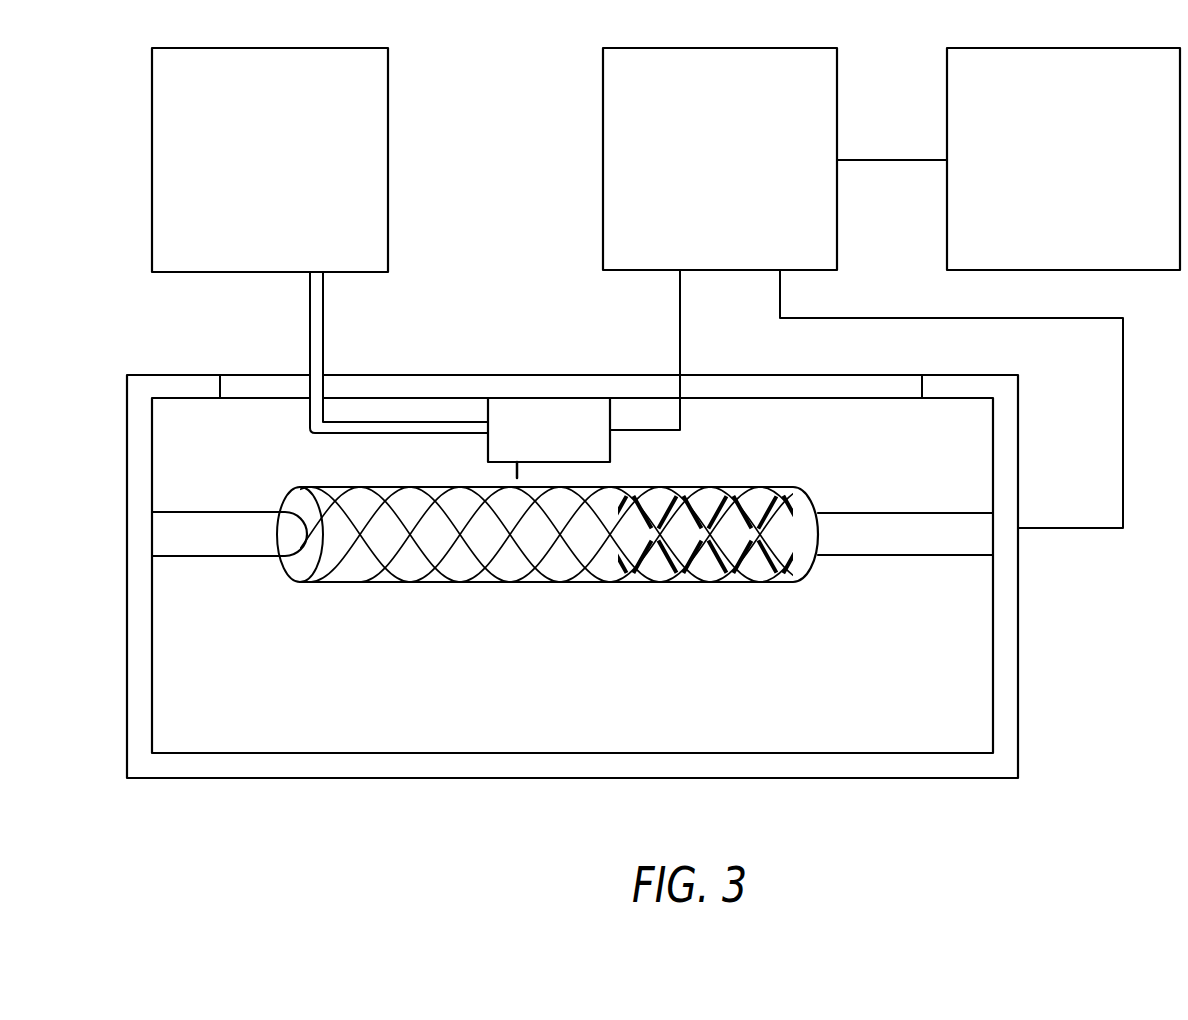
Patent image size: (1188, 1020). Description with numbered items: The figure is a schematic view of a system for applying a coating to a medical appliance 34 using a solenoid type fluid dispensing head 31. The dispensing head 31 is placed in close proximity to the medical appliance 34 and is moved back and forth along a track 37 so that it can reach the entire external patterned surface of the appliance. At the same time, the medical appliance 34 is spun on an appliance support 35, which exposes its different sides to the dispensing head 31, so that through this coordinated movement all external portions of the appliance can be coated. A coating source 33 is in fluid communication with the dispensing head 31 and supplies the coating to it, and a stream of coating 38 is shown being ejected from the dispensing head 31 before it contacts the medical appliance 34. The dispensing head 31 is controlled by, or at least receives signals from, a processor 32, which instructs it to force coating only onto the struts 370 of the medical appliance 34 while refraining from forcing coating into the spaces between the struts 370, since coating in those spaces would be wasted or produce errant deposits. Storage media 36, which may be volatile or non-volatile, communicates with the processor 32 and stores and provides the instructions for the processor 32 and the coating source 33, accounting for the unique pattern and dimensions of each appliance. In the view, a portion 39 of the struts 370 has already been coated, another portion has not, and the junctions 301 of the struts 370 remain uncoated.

The solenoid type fluid dispensing head 31 is at (531, 447).
The processor 32 is at (704, 183).
The coating source 33 is at (249, 183).
The medical appliance 34 is at (535, 569).
The appliance support 35 is at (205, 548).
The storage media 36 is at (1045, 183).
The track 37 is at (393, 388).
The stream of coating 38 is at (513, 473).
The portion of struts 39 is at (753, 587).
The junctions 301 is at (385, 583).
The struts 370 is at (535, 534).